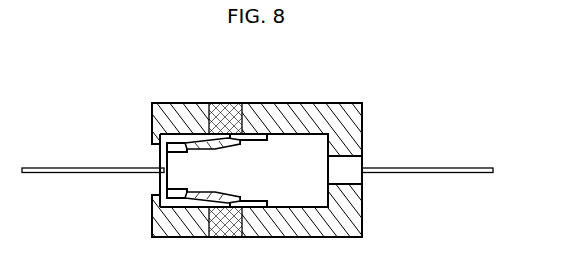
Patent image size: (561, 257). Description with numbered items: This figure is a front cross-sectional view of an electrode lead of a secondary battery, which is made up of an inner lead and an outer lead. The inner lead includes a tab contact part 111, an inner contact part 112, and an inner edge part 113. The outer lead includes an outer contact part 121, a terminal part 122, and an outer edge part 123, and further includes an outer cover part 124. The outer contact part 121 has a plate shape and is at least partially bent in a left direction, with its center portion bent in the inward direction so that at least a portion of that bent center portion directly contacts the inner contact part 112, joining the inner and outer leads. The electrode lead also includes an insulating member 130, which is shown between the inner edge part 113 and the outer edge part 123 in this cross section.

The tab contact part 111 is at (62, 168).
The inner contact part 112 is at (153, 198).
The inner edge part 113 is at (181, 103).
The outer contact part 121 is at (170, 170).
The terminal part 122 is at (467, 168).
The outer edge part 123 is at (278, 103).
The outer cover part 124 is at (355, 194).
The insulating member 130 is at (227, 103).